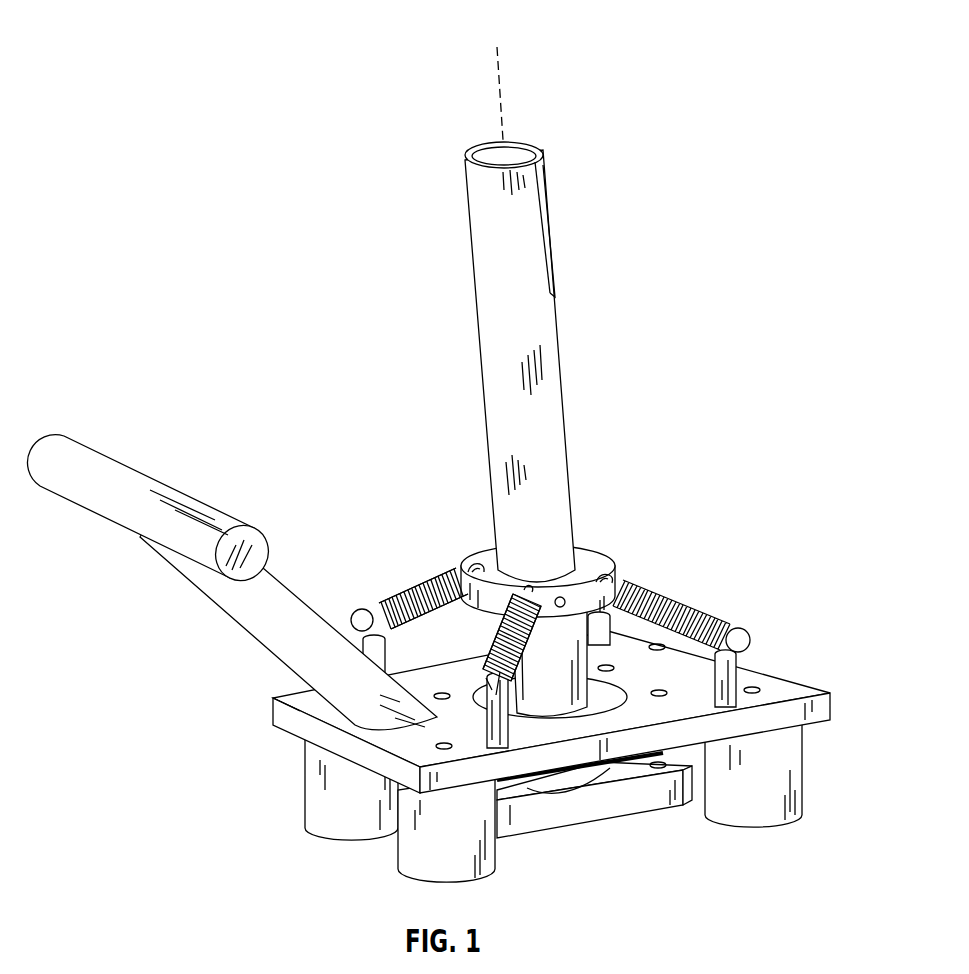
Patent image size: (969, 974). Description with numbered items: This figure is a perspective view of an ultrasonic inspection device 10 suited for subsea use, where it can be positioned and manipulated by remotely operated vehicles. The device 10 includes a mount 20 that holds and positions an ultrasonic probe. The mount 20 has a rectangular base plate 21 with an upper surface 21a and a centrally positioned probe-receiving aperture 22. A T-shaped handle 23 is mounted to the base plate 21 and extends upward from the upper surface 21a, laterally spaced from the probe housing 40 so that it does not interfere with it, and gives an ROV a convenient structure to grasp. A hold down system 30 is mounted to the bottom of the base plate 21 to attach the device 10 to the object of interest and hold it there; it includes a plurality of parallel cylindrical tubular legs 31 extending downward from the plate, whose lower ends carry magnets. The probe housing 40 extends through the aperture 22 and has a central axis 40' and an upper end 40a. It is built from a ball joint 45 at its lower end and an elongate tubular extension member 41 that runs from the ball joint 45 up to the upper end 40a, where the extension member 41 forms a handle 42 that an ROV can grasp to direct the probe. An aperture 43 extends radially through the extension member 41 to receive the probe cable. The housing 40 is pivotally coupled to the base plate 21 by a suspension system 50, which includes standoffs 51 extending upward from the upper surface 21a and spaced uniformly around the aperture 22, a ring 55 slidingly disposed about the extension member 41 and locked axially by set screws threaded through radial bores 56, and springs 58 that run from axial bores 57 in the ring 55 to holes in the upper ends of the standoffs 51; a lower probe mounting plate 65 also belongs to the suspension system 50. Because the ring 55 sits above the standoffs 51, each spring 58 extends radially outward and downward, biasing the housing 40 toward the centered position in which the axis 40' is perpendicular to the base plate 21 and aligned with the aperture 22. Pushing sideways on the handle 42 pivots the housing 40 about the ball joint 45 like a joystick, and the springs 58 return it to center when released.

The ultrasonic inspection device 10 is at (190, 50).
The mount 20 is at (572, 510).
The base plate 21 is at (797, 688).
The upper surface 21a is at (293, 700).
The aperture 22 is at (607, 692).
The handle 23 is at (138, 475).
The hold down system 30 is at (320, 862).
The legs 31 is at (313, 790).
The probe housing 40 is at (577, 664).
The upper end 40a is at (478, 186).
The central axis 40' is at (532, 93).
The extension member 41 is at (560, 453).
The handle 42 is at (532, 203).
The aperture 43 is at (553, 255).
The ball joint 45 is at (577, 777).
The suspension system 50 is at (672, 543).
The standoffs 51 is at (380, 656).
The ring 55 is at (578, 545).
The bores 56 is at (558, 597).
The bores 57 is at (478, 562).
The springs 58 is at (412, 590).
The lower probe mounting plate 65 is at (624, 807).